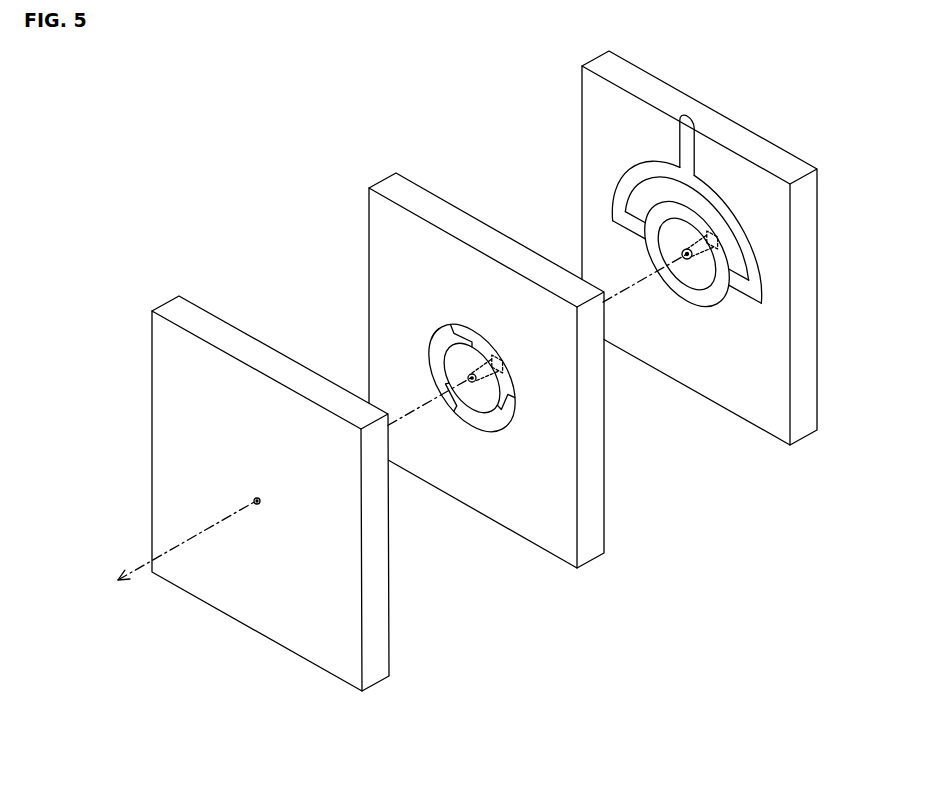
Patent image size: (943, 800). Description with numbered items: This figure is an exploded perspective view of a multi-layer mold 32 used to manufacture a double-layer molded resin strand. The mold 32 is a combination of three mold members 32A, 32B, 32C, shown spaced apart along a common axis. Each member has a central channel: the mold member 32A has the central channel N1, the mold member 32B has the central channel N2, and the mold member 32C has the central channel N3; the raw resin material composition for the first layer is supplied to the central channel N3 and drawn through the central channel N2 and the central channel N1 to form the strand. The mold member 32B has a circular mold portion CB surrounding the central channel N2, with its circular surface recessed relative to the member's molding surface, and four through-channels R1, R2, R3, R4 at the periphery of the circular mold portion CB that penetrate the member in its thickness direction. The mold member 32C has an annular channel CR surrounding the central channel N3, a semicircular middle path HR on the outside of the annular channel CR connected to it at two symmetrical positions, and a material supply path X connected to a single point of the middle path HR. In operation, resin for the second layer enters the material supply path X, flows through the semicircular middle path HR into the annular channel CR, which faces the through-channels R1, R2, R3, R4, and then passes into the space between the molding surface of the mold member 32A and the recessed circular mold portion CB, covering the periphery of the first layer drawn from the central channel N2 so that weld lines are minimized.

The mold 32 is at (353, 158).
The mold member 32A is at (372, 675).
The mold member 32B is at (590, 553).
The mold member 32C is at (803, 428).
The central channel N1 is at (257, 506).
The central channel N2 is at (476, 380).
The central channel N3 is at (690, 261).
The circular mold portion CB is at (462, 352).
The through-channel R1 is at (443, 348).
The through-channel R2 is at (474, 328).
The through-channel R3 is at (514, 382).
The through-channel R4 is at (463, 413).
The semicircular middle path HR is at (726, 210).
The material supply path X is at (688, 119).
The annular channel CR is at (710, 299).